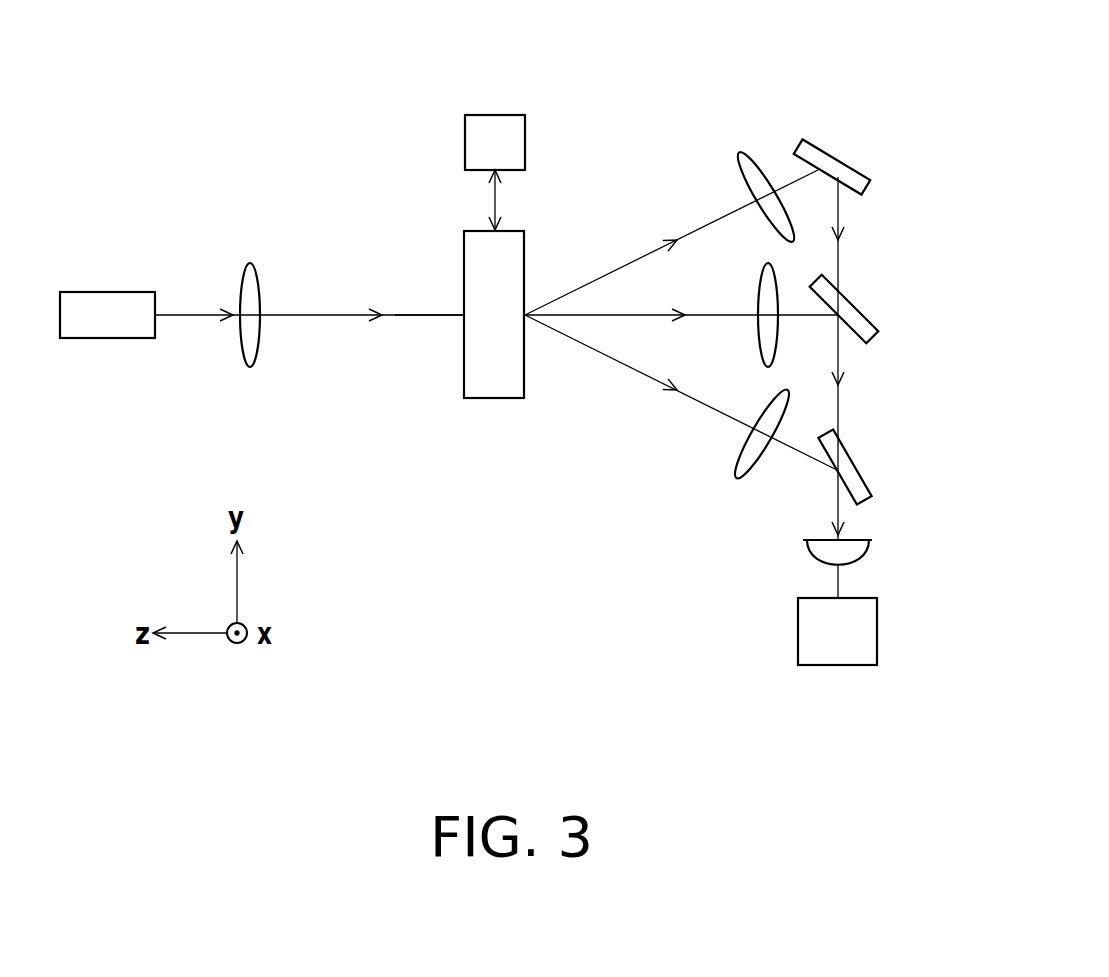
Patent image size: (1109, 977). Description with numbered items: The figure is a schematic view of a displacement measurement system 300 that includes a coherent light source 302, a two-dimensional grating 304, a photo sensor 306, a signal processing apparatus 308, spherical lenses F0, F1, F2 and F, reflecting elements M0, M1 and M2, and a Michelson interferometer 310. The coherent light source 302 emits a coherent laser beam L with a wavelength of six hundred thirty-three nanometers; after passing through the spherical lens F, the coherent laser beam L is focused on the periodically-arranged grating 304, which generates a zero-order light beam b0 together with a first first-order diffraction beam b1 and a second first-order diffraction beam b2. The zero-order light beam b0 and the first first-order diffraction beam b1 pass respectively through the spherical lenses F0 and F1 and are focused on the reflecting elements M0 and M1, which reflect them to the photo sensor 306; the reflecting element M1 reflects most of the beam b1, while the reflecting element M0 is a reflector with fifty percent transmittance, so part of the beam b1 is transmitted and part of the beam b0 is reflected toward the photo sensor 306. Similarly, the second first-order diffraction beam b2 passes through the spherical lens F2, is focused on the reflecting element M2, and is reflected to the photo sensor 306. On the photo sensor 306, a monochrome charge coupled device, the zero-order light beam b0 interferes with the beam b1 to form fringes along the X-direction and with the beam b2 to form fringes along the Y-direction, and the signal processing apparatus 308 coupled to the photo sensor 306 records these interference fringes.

The displacement measurement system 300 is at (951, 735).
The coherent light source 302 is at (108, 292).
The two-dimensional grating 304 is at (493, 398).
The photo sensor 306 is at (873, 550).
The signal processing apparatus 308 is at (877, 632).
The Michelson interferometer 310 is at (495, 115).
The spherical lens F is at (250, 291).
The coherent laser beam L is at (418, 315).
The zero-order light beam b0 is at (705, 318).
The first first-order diffraction beam b1 is at (613, 270).
The second first-order diffraction beam b2 is at (625, 372).
The spherical lens F0 is at (751, 315).
The spherical lens F1 is at (766, 182).
The spherical lens F2 is at (762, 460).
The reflecting element M0 is at (865, 325).
The reflecting element M1 is at (862, 175).
The reflecting element M2 is at (866, 468).